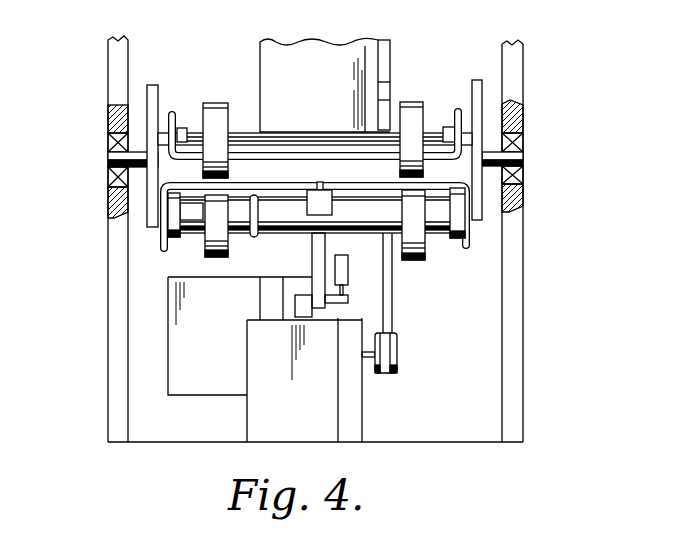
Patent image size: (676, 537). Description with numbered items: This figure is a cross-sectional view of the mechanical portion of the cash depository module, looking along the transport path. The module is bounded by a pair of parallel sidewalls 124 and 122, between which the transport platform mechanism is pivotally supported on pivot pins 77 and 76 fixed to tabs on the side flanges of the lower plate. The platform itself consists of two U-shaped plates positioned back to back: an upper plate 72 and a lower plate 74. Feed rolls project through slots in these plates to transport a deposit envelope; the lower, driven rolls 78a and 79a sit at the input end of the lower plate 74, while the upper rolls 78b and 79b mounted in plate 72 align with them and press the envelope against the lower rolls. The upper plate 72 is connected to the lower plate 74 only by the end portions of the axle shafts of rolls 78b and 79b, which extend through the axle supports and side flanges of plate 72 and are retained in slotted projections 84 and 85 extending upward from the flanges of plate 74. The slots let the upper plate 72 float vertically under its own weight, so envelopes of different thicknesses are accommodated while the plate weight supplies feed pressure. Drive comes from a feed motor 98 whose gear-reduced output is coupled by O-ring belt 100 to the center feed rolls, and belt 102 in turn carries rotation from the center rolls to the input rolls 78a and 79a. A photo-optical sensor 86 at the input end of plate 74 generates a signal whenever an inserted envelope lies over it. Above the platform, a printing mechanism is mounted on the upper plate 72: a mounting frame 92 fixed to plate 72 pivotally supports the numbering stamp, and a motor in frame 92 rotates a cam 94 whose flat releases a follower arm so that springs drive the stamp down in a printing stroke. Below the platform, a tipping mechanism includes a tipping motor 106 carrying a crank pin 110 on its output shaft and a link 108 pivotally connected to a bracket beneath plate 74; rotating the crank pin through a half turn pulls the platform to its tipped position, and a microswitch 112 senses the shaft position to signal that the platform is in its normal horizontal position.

The sidewall 124 is at (108, 58).
The sidewall 122 is at (523, 60).
The pivot pin 77 is at (108, 158).
The pivot pin 76 is at (523, 157).
The slotted projection 85 is at (152, 85).
The slotted projection 84 is at (476, 80).
The mounting frame 92 is at (330, 87).
The cam 94 is at (392, 48).
The U-shaped plate 72 is at (282, 150).
The U-shaped plate 74 is at (372, 184).
The feed roll 79b is at (213, 103).
The feed roll 78b is at (410, 102).
The feed roll 79a is at (205, 252).
The feed roll 78a is at (428, 255).
The photo-optical sensor 86 is at (332, 205).
The O-ring belt 102 is at (256, 236).
The microswitch 112 is at (343, 266).
The crank pin 110 is at (334, 301).
The link 108 is at (283, 278).
The tipping motor 106 is at (204, 396).
The feed motor 98 is at (363, 418).
The O-ring belt 100 is at (392, 288).